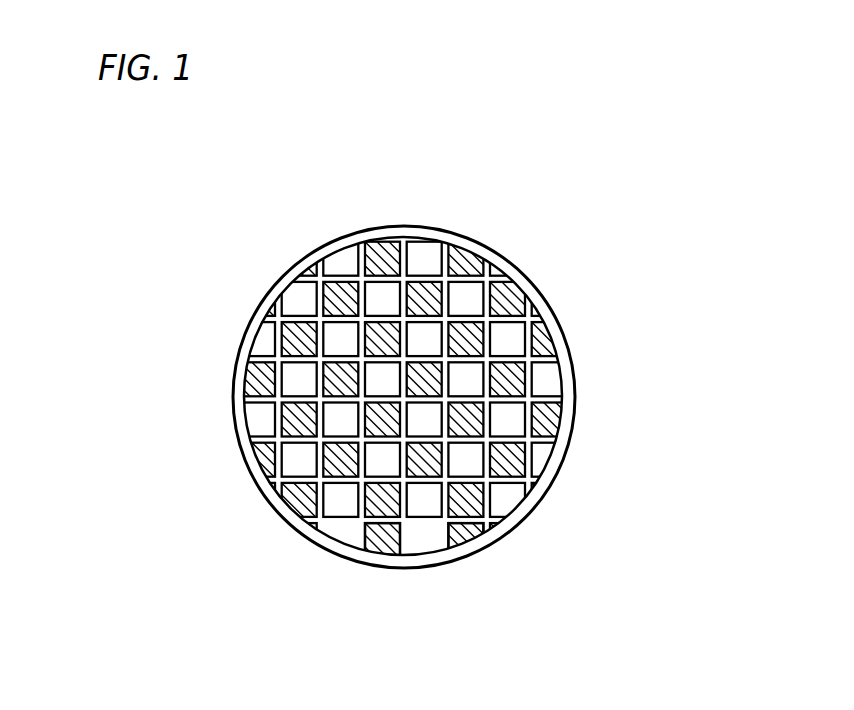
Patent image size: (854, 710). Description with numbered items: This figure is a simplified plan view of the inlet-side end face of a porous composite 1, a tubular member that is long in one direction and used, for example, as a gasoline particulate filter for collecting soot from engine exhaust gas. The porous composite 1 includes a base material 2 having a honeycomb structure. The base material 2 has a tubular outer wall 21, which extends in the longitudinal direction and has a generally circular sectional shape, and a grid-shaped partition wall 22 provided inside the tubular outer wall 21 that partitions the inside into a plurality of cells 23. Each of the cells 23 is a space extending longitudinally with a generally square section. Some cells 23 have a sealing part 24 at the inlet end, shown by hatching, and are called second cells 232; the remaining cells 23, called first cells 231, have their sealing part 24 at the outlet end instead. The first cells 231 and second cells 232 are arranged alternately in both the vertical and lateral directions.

The porous composite 1 is at (257, 208).
The base material 2 is at (592, 240).
The tubular outer wall 21 is at (502, 268).
The partition wall 22 is at (523, 315).
The cells 23 is at (636, 323).
The first cells 231 is at (517, 329).
The second cells 232 is at (508, 375).
The sealing part 24 is at (303, 335).